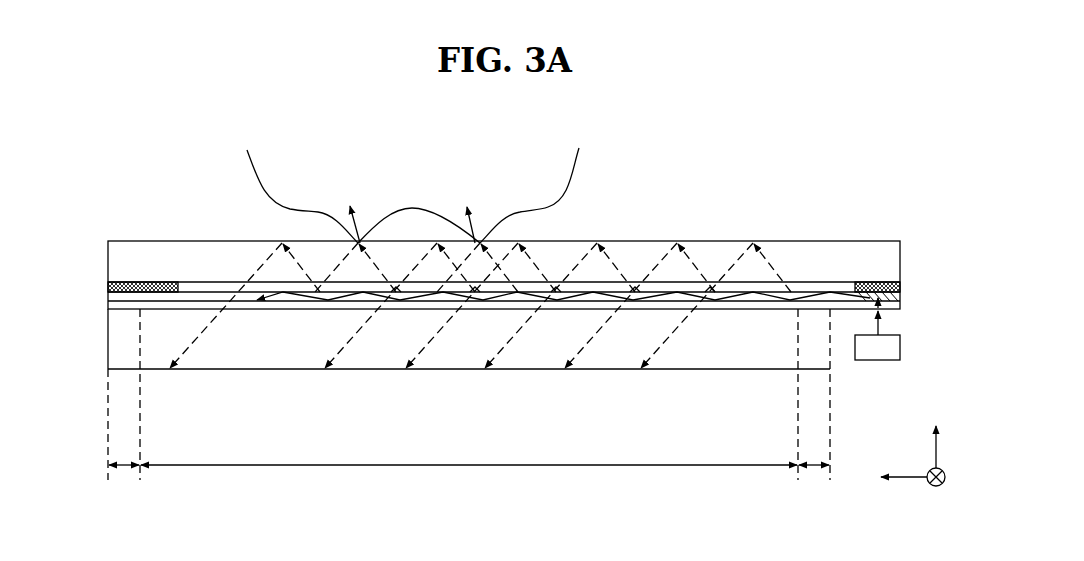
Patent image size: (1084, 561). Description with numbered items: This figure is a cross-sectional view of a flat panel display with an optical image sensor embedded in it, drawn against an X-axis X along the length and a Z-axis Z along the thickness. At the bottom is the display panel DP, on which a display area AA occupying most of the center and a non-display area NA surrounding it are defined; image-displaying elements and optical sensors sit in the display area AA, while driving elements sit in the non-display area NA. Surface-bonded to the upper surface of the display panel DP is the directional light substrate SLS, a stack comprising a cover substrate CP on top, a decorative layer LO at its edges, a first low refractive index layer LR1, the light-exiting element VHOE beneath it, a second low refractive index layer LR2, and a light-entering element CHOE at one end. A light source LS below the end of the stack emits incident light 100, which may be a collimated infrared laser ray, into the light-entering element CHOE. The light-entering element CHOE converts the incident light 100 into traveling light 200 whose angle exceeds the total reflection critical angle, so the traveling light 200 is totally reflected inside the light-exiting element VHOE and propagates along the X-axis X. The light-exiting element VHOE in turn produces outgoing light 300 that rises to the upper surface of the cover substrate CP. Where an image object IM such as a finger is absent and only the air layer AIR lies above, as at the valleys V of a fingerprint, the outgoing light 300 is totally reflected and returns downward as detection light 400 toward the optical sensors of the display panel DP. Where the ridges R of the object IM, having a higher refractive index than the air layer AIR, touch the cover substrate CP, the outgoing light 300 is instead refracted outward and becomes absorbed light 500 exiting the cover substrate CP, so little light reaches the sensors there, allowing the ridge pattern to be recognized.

The incident light 100 is at (877, 322).
The traveling light 200 is at (270, 293).
The outgoing light 300 is at (548, 292).
The detection light 400 is at (215, 318).
The absorbed light 500 is at (358, 243).
The image object IM is at (270, 167).
The valleys V is at (413, 205).
The ridges R is at (483, 240).
The air layer AIR is at (126, 224).
The decorative layer LO is at (108, 287).
The directional light substrate SLS is at (907, 196).
The cover substrate CP is at (652, 285).
The first low refractive index layer LR1 is at (717, 292).
The light-exiting element VHOE is at (783, 285).
The second low refractive index layer LR2 is at (818, 307).
The light-entering element CHOE is at (873, 298).
The light source LS is at (877, 330).
The display panel DP is at (721, 360).
The non-display area NA is at (469, 484).
The display area AA is at (469, 484).
The Z-axis Z is at (936, 431).
The X-axis X is at (901, 482).